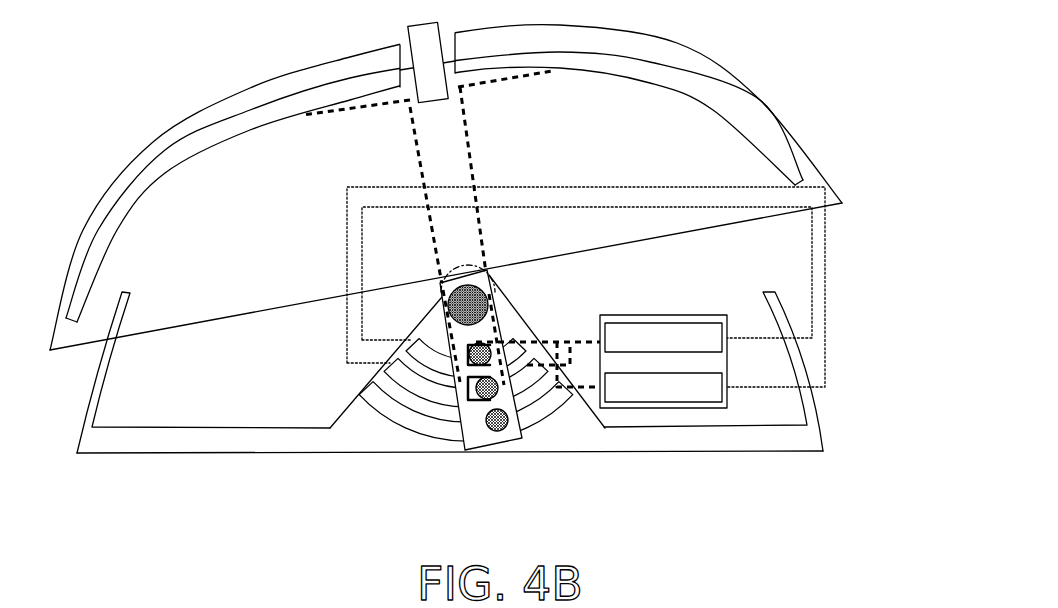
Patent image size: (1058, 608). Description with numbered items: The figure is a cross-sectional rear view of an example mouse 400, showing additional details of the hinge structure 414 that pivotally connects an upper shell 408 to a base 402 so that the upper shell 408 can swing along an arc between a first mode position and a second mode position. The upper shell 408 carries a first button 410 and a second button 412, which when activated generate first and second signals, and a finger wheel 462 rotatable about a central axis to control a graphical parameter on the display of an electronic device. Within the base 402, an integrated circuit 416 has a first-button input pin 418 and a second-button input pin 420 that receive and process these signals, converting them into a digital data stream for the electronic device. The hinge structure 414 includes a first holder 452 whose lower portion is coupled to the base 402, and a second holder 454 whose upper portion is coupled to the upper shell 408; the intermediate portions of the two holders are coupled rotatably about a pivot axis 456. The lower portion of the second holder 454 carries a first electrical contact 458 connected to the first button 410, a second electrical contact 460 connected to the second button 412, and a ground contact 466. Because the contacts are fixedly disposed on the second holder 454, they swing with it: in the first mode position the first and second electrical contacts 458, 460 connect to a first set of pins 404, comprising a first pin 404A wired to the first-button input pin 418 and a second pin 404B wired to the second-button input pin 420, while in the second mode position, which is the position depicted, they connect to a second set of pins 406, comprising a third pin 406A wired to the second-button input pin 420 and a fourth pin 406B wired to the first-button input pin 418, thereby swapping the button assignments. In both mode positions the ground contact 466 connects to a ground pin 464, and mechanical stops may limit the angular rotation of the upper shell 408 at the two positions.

The mouse 400 is at (486, 279).
The base 402 is at (823, 419).
The first set of pins 404 is at (367, 364).
The first pin 404A is at (412, 340).
The second pin 404B is at (394, 367).
The second set of pins 406 is at (575, 325).
The third pin 406A is at (512, 330).
The fourth pin 406B is at (533, 347).
The upper shell 408 is at (483, 184).
The first button 410 is at (153, 143).
The second button 412 is at (675, 43).
The hinge structure 414 is at (514, 281).
The integrated circuit 416 is at (691, 325).
The first-button input pin 418 is at (705, 322).
The second-button input pin 420 is at (724, 377).
The first holder 452 is at (370, 393).
The second holder 454 is at (465, 449).
The pivot axis 456 is at (446, 292).
The first electrical contact 458 is at (466, 350).
The second electrical contact 460 is at (498, 390).
The finger wheel 462 is at (408, 35).
The ground pin 464 is at (350, 435).
The ground contact 466 is at (470, 442).